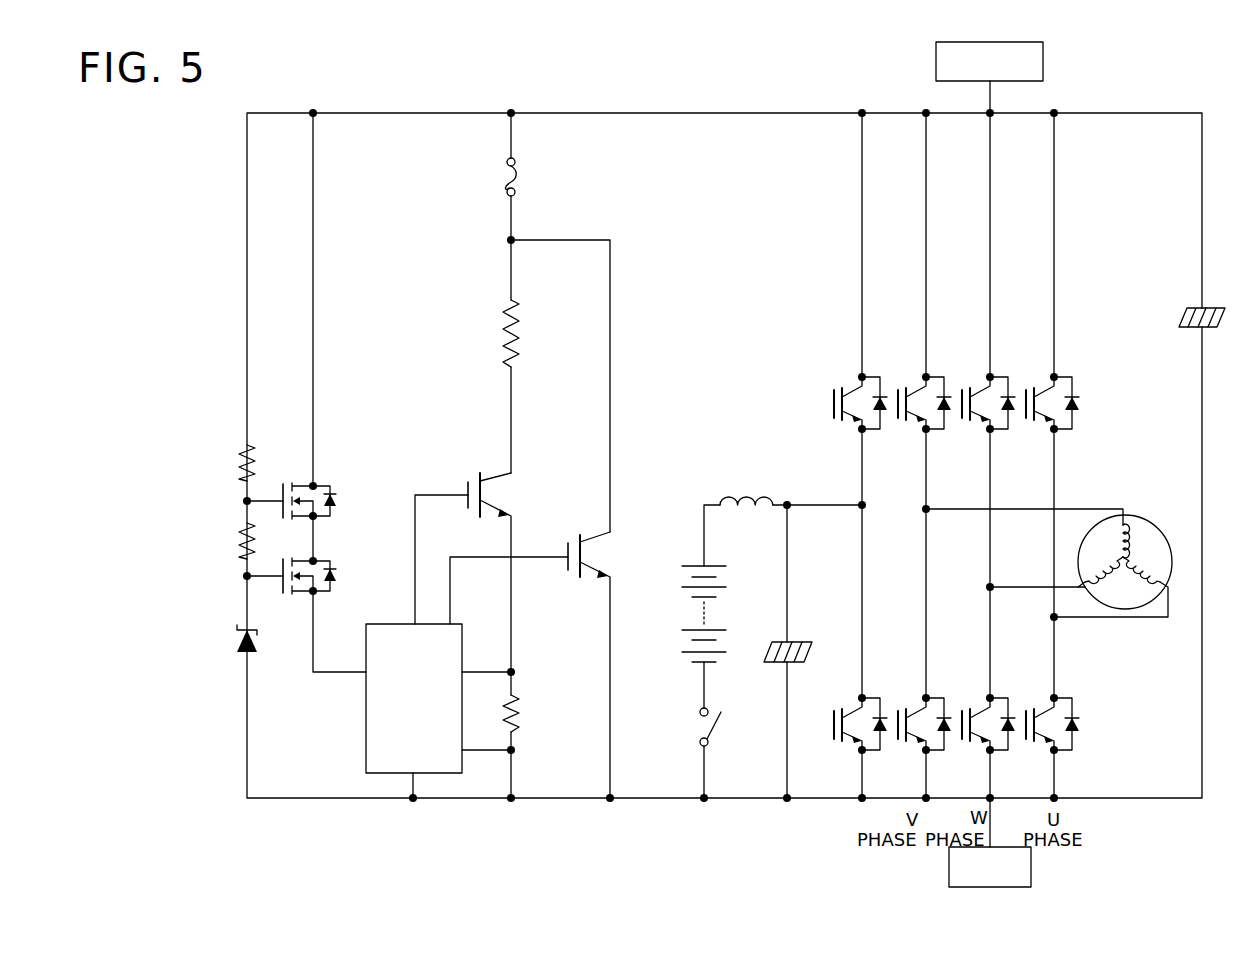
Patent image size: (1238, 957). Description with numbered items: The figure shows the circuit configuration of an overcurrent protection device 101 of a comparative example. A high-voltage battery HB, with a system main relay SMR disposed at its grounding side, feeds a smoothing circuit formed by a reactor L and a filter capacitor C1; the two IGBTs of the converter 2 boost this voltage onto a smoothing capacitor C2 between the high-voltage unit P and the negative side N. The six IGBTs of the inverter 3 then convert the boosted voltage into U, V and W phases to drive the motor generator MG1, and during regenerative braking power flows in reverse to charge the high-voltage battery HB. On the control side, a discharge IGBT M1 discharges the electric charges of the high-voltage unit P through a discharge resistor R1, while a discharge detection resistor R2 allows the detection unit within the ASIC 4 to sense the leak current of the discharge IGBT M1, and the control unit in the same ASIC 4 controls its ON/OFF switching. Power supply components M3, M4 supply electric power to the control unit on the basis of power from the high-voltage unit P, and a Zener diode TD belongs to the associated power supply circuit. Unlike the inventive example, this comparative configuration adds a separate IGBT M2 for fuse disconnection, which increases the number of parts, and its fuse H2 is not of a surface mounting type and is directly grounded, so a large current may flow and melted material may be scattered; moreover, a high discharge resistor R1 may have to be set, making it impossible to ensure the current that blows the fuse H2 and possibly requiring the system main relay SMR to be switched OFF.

The overcurrent protection device 101 is at (790, 64).
The converter 2 is at (818, 381).
The inverter 3 is at (1100, 748).
The application specific integrated circuit (ASIC) 4 is at (354, 750).
The discharge IGBT M1 is at (463, 561).
The IGBT for fuse disconnection M2 is at (530, 654).
The power supply component M3 is at (262, 463).
The power supply component M4 is at (262, 541).
The discharge resistor R1 is at (491, 356).
The discharge detection resistor R2 is at (494, 735).
The fuse H2 is at (493, 176).
The Zener diode TD is at (258, 653).
The high-voltage battery HB is at (686, 614).
The reactor L is at (745, 518).
The filter capacitor C1 is at (785, 651).
The smoothing capacitor C2 is at (1197, 306).
The system main relay SMR is at (682, 730).
The high-voltage unit P is at (989, 77).
The negative bus N is at (990, 842).
The motor generator MG1 is at (1049, 525).